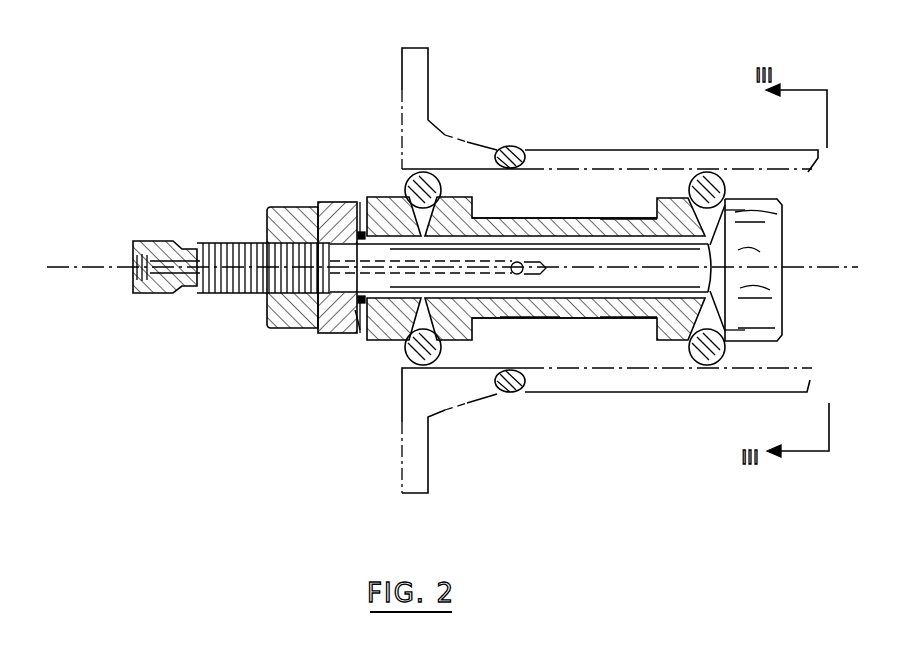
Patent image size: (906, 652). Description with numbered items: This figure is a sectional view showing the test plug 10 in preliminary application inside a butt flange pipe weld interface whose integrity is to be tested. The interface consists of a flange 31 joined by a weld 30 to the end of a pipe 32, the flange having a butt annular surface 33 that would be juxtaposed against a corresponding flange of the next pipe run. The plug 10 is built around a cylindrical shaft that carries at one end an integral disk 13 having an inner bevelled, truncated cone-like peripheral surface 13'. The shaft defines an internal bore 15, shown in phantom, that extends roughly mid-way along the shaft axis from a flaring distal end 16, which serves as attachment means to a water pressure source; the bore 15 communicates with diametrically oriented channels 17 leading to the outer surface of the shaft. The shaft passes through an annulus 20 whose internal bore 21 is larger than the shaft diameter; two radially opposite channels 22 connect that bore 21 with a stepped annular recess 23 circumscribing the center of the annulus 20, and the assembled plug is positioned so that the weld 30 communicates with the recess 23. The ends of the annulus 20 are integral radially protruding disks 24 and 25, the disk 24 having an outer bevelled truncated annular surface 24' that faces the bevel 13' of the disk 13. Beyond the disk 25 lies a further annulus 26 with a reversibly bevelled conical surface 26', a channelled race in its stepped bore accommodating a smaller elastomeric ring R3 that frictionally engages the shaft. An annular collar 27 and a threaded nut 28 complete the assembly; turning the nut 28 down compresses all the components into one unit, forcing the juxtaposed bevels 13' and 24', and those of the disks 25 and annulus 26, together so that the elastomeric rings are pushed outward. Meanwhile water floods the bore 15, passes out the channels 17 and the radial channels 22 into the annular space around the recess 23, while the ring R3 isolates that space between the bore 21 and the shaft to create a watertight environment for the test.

The test plug 10 is at (358, 168).
The disk 13 is at (779, 270).
The bevelled peripheral surface 13' is at (775, 268).
The internal bore 15 is at (395, 296).
The flaring distal end 16 is at (133, 270).
The diametrically oriented channels 17 is at (552, 272).
The annulus 20 is at (640, 222).
The internal bore 21 is at (620, 318).
The radial channels 22 is at (566, 215).
The stepped annular recess 23 is at (543, 318).
The radially protruding disk 24 is at (728, 282).
The truncated annular surface 24' is at (782, 270).
The radially protruding disk 25 is at (458, 197).
The annulus 26 is at (337, 230).
The reversibly bevelled conical surface 26' is at (375, 227).
The annular collar 27 is at (318, 325).
The threaded nut 28 is at (267, 312).
The weld 30 is at (526, 137).
The flange 31 is at (414, 83).
The pipe 32 is at (645, 150).
The butt annular surface 33 is at (402, 70).
The elastomeric annular seal R3 is at (358, 318).